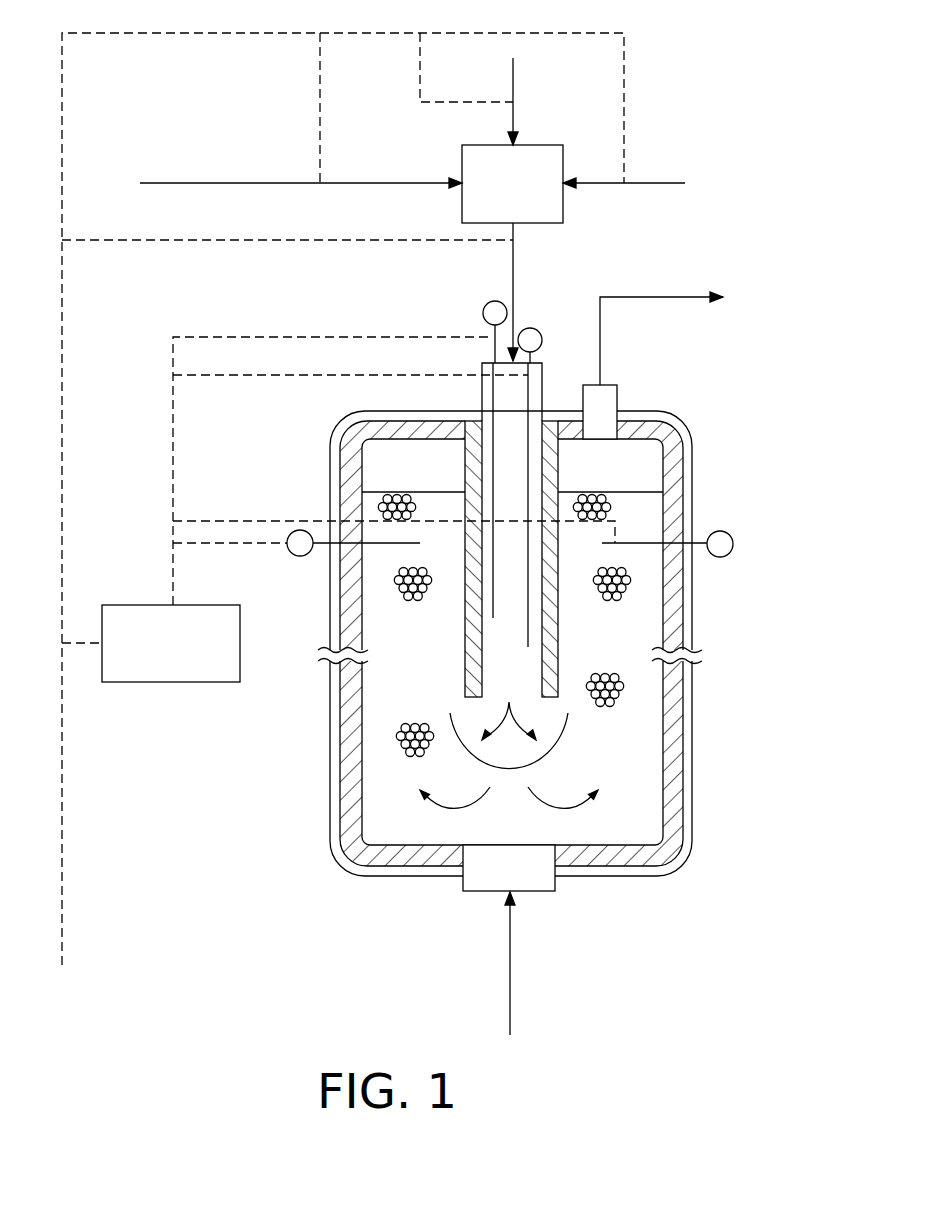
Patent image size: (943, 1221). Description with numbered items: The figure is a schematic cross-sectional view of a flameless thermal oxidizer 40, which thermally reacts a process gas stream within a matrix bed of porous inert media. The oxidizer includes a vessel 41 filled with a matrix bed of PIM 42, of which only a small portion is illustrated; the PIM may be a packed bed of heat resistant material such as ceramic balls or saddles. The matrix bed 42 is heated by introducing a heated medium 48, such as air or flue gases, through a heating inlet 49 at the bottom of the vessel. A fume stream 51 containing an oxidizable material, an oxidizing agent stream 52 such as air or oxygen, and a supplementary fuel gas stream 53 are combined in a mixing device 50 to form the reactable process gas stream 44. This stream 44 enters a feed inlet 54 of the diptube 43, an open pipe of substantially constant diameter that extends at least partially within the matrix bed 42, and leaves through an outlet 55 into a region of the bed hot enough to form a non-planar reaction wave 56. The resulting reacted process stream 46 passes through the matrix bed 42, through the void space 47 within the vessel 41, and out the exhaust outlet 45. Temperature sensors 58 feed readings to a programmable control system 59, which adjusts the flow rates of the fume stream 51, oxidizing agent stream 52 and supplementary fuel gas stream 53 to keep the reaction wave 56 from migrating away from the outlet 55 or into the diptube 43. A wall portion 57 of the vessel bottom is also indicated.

The flameless thermal oxidizer 40 is at (792, 96).
The vessel 41 is at (693, 730).
The matrix bed of PIM 42 is at (388, 507).
The diptube 43 is at (480, 393).
The reactable process gas stream 44 is at (513, 271).
The exhaust outlet 45 is at (607, 402).
The reacted process stream 46 is at (642, 293).
The void space 47 is at (623, 467).
The heated medium 48 is at (512, 938).
The heating inlet 49 is at (540, 893).
The mixing device 50 is at (537, 157).
The fume stream 51 is at (222, 182).
The oxidizing agent stream 52 is at (513, 79).
The supplementary fuel gas stream 53 is at (653, 183).
The feed inlet 54 is at (482, 362).
The outlet 55 is at (483, 716).
The reaction wave 56 is at (567, 735).
The vessel bottom wall 57 is at (613, 853).
The temperature sensors 58 is at (483, 313).
The control system 59 is at (187, 663).